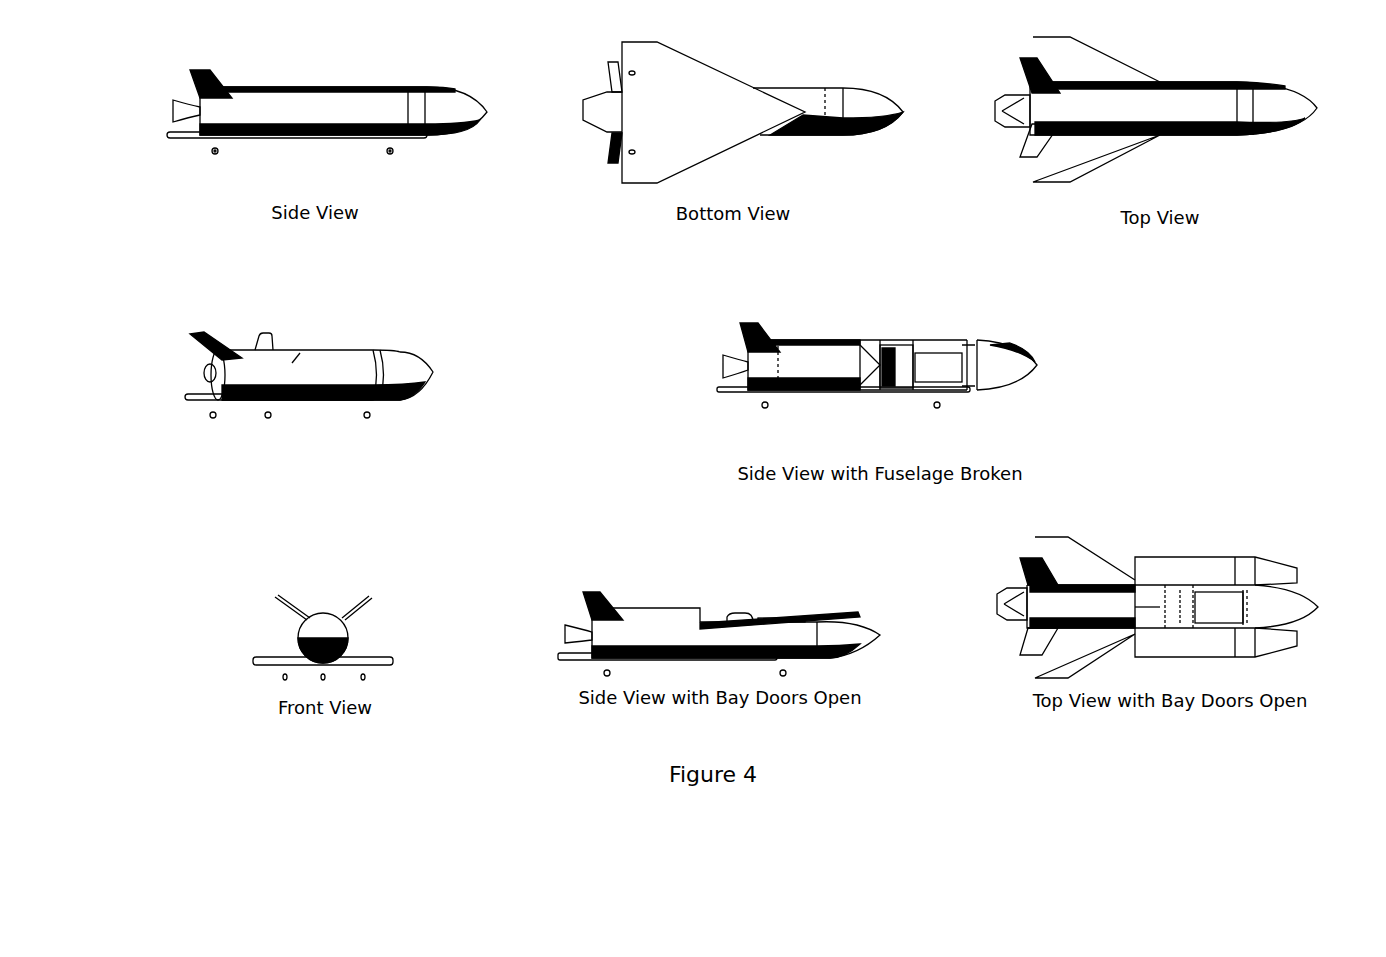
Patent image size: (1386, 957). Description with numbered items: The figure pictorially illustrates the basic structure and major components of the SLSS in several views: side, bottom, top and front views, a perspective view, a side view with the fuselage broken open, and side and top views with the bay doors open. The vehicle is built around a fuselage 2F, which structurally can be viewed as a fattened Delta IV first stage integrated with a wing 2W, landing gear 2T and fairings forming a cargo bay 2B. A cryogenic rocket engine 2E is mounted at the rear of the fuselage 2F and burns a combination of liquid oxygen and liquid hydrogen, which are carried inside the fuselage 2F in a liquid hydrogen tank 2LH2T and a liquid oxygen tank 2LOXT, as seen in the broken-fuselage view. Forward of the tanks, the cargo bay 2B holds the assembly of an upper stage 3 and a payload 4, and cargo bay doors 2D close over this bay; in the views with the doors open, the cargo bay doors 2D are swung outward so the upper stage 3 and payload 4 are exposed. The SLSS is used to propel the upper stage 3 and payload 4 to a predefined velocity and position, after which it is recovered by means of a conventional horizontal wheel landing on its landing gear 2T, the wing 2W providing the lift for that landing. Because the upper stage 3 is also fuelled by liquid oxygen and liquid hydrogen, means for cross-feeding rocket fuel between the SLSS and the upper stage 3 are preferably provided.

The cryogenic rocket engine 2E is at (179, 97).
The wing 2W is at (226, 80).
The fuselage 2F is at (338, 86).
The landing gear 2T is at (395, 157).
The liquid hydrogen tank 2LH2T is at (804, 336).
The liquid oxygen tank 2LOXT is at (777, 396).
The upper stage 3 is at (887, 338).
The payload 4 is at (941, 338).
The cargo bay 2B is at (983, 360).
The cargo bay doors 2D is at (847, 612).